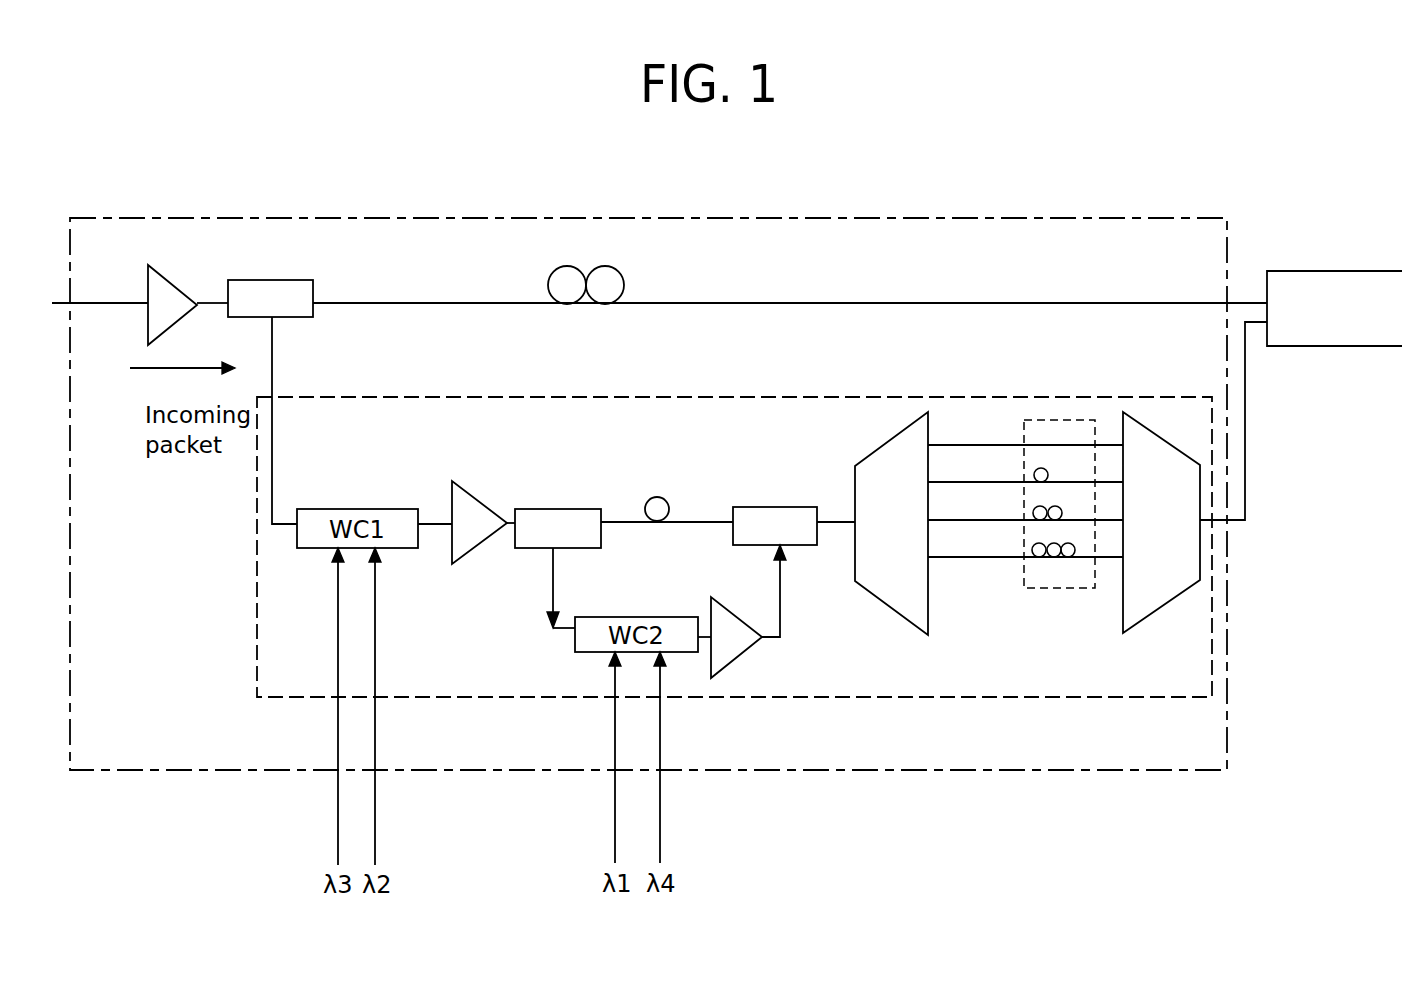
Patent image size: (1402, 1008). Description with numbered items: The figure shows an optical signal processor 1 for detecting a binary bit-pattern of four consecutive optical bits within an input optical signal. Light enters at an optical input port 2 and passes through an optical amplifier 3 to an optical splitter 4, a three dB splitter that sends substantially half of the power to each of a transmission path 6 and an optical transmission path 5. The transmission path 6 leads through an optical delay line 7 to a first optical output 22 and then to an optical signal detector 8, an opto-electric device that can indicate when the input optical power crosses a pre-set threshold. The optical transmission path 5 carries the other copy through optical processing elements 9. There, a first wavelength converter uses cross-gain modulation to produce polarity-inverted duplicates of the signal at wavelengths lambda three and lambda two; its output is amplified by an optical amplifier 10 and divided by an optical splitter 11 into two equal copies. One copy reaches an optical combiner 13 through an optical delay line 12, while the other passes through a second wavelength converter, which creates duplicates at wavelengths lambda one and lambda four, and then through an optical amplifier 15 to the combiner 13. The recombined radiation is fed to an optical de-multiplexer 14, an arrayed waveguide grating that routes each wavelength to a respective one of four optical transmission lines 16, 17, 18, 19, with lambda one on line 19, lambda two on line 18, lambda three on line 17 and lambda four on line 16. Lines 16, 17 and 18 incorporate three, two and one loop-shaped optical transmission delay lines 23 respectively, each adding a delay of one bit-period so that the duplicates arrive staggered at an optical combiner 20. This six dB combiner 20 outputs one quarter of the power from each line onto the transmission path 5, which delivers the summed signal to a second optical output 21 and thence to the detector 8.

The signal processor 1 is at (684, 217).
The optical input port 2 is at (133, 303).
The optical amplifier 3 is at (174, 318).
The optical splitter 4 is at (313, 289).
The optical transmission path 5 is at (272, 445).
The transmission path 6 is at (830, 301).
The optical delay line 7 is at (577, 305).
The optical signal detector 8 is at (1356, 347).
The optical processing elements 9 is at (228, 623).
The optical amplifier 10 is at (484, 536).
The optical splitter 11 is at (553, 509).
The optical delay line 12 is at (665, 497).
The optical combiner 13 is at (767, 507).
The optical de-multiplexer 14 is at (892, 437).
The optical amplifier 15 is at (742, 650).
The optical transmission line 16 is at (1005, 558).
The optical transmission line 17 is at (1010, 518).
The optical transmission line 18 is at (1010, 481).
The optical transmission line 19 is at (990, 444).
The optical combiner 20 is at (1170, 448).
The second optical output 21 is at (1228, 521).
The first optical output 22 is at (1228, 300).
The optical transmission delay lines 23 is at (1060, 603).